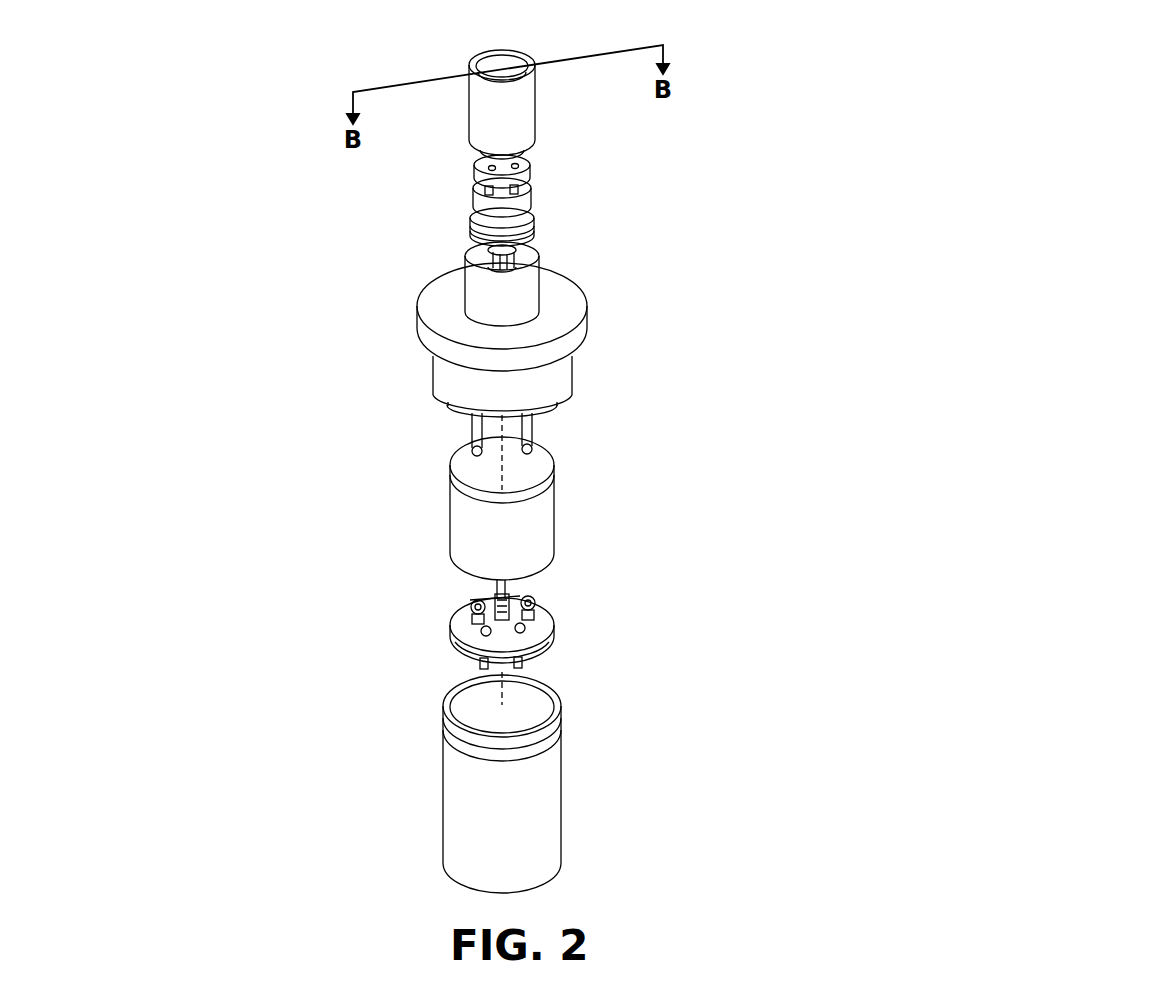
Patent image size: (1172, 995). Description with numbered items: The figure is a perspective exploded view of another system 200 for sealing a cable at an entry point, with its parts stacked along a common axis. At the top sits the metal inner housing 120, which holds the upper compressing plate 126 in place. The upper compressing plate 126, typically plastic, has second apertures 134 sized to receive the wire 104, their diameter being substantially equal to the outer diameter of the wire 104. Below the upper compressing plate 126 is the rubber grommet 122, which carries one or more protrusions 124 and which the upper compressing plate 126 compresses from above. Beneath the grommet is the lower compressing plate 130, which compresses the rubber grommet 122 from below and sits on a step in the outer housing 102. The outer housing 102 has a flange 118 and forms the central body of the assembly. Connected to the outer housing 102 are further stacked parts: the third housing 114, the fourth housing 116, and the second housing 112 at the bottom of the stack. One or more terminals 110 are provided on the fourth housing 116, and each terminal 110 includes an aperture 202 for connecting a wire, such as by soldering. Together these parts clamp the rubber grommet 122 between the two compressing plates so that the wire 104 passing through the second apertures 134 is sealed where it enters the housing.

The system for sealing a cable at an entry point 200 is at (1033, 129).
The metal inner housing 120 is at (538, 118).
The upper compressing plate 126 is at (494, 171).
The second apertures 134 is at (490, 171).
The rubber grommet 122 is at (494, 199).
The protrusions 124 is at (490, 198).
The lower compressing plate 130 is at (536, 236).
The flange 118 is at (495, 284).
The wire 104 is at (492, 260).
The outer housing 102 is at (537, 380).
The third housing 114 is at (557, 515).
The fourth housing 116 is at (515, 634).
The terminals 110 is at (470, 604).
The aperture 202 is at (477, 607).
The second housing 112 is at (563, 795).